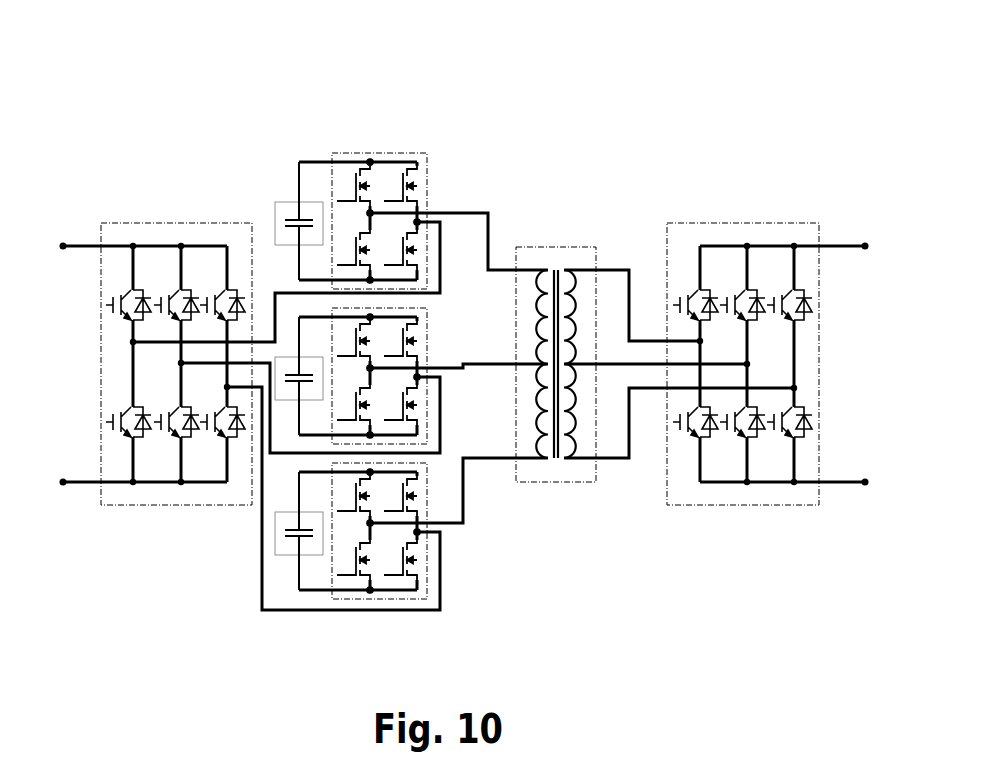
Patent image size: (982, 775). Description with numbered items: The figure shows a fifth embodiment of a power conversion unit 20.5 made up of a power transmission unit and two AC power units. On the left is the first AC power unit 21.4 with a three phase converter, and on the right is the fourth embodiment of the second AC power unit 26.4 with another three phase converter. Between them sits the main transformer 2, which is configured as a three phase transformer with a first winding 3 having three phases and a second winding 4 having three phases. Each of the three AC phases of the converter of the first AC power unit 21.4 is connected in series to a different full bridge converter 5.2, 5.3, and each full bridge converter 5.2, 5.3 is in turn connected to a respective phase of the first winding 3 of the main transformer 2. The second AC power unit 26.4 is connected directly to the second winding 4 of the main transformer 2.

The main transformer 2 is at (557, 266).
The first winding 3 is at (545, 462).
The second winding 4 is at (567, 462).
The full bridge converter 5.2 is at (440, 197).
The full bridge converter 5.3 is at (445, 532).
The power conversion unit 20.5 is at (657, 152).
The first AC power unit 21.4 is at (168, 220).
The second AC power unit 26.4 is at (763, 220).